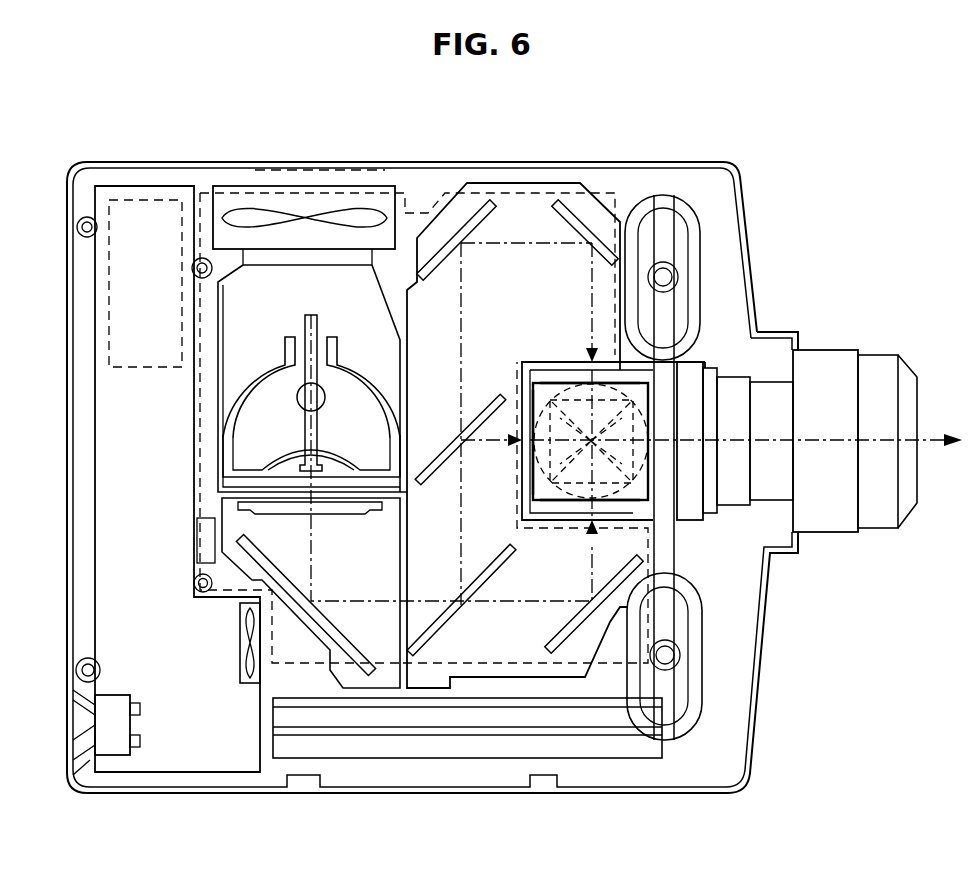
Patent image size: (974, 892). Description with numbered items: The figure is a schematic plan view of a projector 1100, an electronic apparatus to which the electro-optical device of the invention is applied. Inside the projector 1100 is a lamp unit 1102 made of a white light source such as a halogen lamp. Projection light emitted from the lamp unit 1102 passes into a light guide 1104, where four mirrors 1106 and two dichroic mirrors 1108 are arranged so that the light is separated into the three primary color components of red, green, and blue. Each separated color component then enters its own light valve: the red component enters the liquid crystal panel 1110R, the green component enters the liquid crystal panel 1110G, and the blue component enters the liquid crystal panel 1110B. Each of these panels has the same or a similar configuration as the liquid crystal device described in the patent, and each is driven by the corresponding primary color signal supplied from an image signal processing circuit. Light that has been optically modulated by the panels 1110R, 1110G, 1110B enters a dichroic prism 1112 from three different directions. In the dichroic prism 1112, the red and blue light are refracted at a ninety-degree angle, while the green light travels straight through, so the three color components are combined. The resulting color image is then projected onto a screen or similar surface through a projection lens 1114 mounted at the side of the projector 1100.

The projector 1100 is at (750, 169).
The lamp unit 1102 is at (355, 298).
The light guide 1104 is at (458, 193).
The mirrors 1106 is at (568, 223).
The dichroic mirrors 1108 is at (485, 570).
The liquid crystal panel 1110R is at (572, 321).
The liquid crystal panel 1110G is at (522, 410).
The liquid crystal panel 1110B is at (550, 513).
The dichroic prism 1112 is at (700, 518).
The projection lens 1114 is at (885, 363).